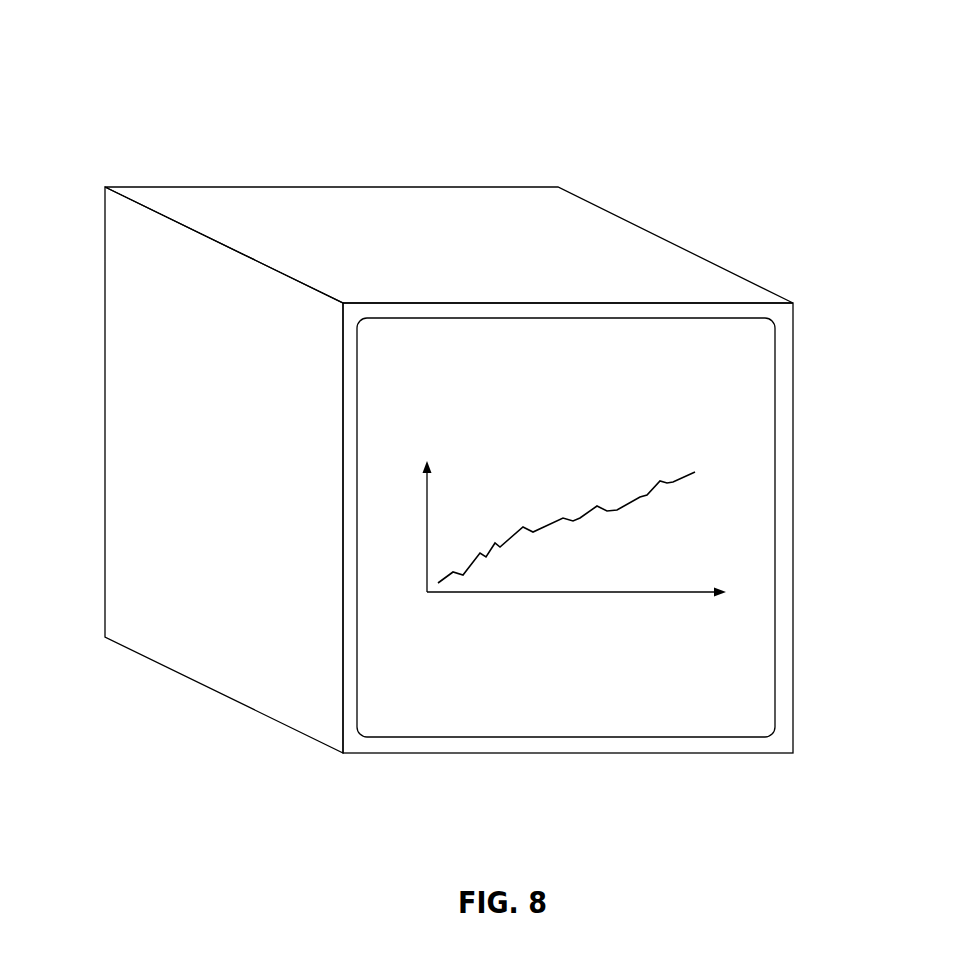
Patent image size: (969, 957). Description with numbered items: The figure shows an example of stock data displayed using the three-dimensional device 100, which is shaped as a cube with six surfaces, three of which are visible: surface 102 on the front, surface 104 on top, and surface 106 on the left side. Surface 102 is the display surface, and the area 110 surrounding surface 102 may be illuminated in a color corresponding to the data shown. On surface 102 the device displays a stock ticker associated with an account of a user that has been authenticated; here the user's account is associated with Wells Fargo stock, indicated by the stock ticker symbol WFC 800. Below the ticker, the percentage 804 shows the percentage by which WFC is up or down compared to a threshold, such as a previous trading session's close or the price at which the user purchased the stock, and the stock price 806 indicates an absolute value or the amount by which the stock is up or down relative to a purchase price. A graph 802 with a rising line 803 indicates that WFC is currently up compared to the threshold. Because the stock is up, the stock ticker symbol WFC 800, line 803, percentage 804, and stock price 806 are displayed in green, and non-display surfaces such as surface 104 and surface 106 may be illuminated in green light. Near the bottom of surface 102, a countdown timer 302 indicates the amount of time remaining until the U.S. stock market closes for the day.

The three-dimensional device 100 is at (107, 86).
The surface 102 is at (755, 377).
The surface 104 is at (653, 252).
The surface 106 is at (118, 362).
The area surrounding surface 110 is at (787, 545).
The countdown timer 302 is at (730, 692).
The stock ticker symbol WFC 800 is at (622, 348).
The graph 802 is at (610, 461).
The line 803 is at (627, 507).
The percentage 804 is at (493, 398).
The stock price 806 is at (470, 434).